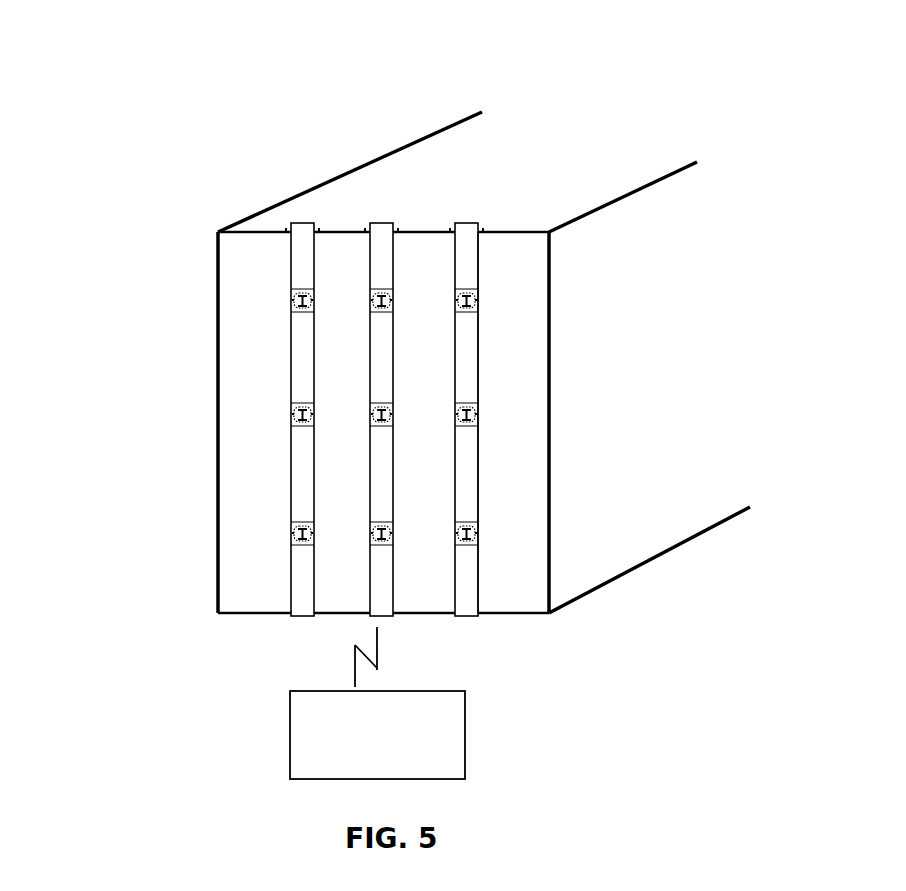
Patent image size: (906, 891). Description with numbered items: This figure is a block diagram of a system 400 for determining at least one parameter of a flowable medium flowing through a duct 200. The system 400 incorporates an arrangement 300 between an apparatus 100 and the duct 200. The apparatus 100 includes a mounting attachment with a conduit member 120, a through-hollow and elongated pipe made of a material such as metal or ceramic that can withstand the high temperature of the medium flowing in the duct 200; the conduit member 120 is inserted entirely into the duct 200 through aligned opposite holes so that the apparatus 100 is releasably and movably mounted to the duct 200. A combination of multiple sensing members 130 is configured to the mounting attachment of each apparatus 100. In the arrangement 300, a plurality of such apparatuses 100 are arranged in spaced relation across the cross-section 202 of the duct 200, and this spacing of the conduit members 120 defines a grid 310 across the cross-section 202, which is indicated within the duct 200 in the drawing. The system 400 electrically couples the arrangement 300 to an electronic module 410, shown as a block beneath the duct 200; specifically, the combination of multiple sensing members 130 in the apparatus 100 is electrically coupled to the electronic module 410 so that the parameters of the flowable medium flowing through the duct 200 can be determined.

The apparatus 100 is at (243, 283).
The conduit member 120 is at (290, 357).
The combination of multiple sensing members 130 is at (293, 421).
The duct 200 is at (397, 148).
The cross-section 202 is at (545, 488).
The arrangement 300 is at (610, 97).
The grid 310 is at (492, 492).
The system 400 is at (180, 660).
The electronic module 410 is at (377, 735).